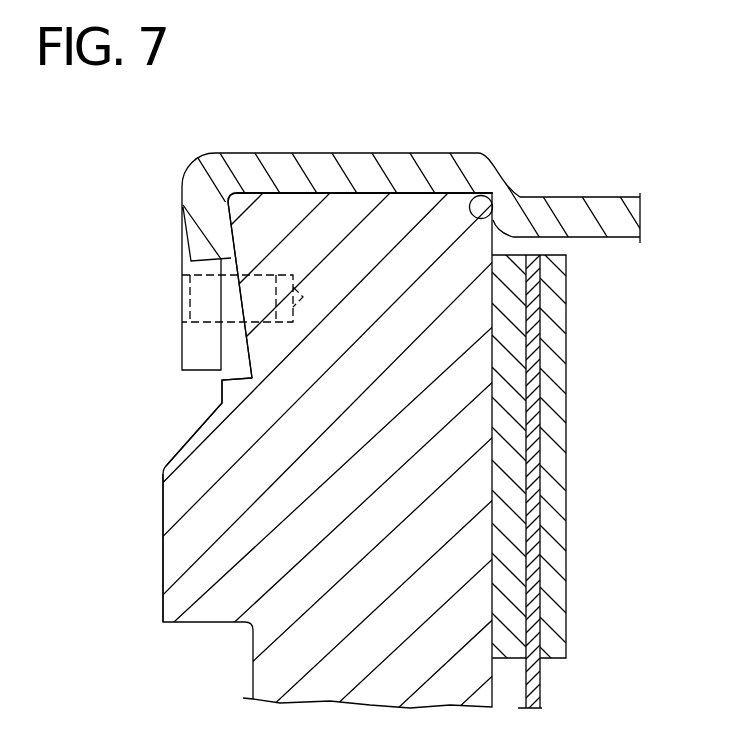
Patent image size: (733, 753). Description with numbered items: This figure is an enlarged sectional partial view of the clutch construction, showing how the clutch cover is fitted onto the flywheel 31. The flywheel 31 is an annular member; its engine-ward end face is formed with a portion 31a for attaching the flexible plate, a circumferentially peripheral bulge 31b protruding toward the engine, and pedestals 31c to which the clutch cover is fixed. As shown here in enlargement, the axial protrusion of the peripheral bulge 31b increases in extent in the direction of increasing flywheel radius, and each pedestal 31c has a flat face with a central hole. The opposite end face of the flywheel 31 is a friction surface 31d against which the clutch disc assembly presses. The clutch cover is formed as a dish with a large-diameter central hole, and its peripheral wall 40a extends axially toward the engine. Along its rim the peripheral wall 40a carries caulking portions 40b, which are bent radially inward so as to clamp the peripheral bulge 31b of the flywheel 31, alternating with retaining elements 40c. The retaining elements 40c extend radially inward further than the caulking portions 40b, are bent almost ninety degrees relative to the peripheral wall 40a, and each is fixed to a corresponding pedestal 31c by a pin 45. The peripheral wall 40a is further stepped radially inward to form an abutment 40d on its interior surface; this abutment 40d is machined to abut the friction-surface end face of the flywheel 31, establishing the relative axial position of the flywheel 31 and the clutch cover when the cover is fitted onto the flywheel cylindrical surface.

The flywheel 31 is at (227, 592).
The portion for attaching the flexible plate 31a is at (163, 540).
The peripheral bulge 31b is at (240, 204).
The pedestal 31c is at (232, 382).
The friction surface 31d is at (496, 477).
The peripheral wall 40a is at (365, 175).
The caulking portion 40b is at (208, 177).
The retaining element 40c is at (195, 347).
The abutment 40d is at (472, 190).
The pin 45 is at (200, 296).